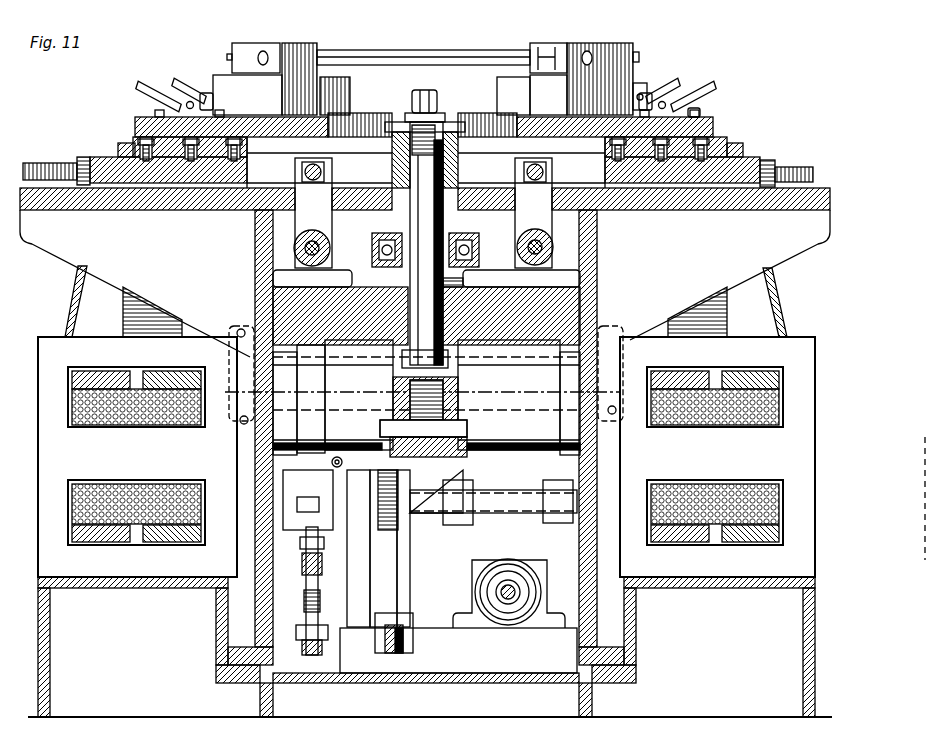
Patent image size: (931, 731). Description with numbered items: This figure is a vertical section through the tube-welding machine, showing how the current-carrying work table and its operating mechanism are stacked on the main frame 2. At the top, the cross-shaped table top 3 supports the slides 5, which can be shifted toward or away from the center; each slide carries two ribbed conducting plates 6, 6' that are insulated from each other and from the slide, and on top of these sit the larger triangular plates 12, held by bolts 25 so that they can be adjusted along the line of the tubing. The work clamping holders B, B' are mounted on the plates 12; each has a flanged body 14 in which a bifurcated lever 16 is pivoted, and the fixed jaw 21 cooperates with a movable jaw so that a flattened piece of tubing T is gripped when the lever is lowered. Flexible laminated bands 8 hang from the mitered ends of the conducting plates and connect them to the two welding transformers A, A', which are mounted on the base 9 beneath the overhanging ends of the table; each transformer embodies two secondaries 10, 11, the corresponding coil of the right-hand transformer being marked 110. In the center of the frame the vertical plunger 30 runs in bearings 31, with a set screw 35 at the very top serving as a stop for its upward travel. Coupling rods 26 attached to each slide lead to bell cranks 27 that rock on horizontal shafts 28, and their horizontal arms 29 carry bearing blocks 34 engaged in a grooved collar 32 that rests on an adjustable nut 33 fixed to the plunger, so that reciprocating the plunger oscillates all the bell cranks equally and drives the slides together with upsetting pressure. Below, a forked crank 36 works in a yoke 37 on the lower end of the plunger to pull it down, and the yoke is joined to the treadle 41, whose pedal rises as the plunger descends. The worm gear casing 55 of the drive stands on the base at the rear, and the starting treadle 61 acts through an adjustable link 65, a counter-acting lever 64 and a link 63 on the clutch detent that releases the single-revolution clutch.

The main frame 2 is at (597, 620).
The table top 3 is at (116, 210).
The slide 5 is at (98, 157).
The ribbed plate 6 is at (674, 138).
The ribbed plate 6' is at (176, 138).
The flexible laminated band 8 is at (72, 312).
The base 9 is at (638, 677).
The secondary 10 is at (112, 540).
The secondary 11 is at (172, 540).
The field coil 110 is at (684, 540).
The plate 12 is at (133, 117).
The flanged body 14 is at (348, 97).
The bifurcated lever 16 is at (160, 92).
The fixed jaw 21 is at (606, 39).
The bolt 25 is at (697, 112).
The coupling rod 26 is at (800, 167).
The bell crank 27 is at (423, 213).
The shaft 28 is at (553, 247).
The horizontal arm 29 is at (426, 307).
The vertical plunger 30 is at (450, 232).
The bearing 31 is at (458, 185).
The grooved collar 32 is at (388, 233).
The adjustable nut 33 is at (463, 283).
The bearing block 34 is at (322, 280).
The set screw 35 is at (437, 100).
The forked crank 36 is at (428, 495).
The yoke 37 is at (458, 388).
The treadle 41 is at (413, 625).
The worm gear casing 55 is at (458, 600).
The treadle 61 is at (304, 645).
The link 63 is at (320, 543).
The counter-acting lever 64 is at (320, 563).
The adjustable link 65 is at (320, 600).
The welding transformer A is at (137, 457).
The welding transformer A' is at (717, 457).
The clamping holder B is at (397, 47).
The clamping holder B' is at (451, 67).
The tubing T is at (410, 50).